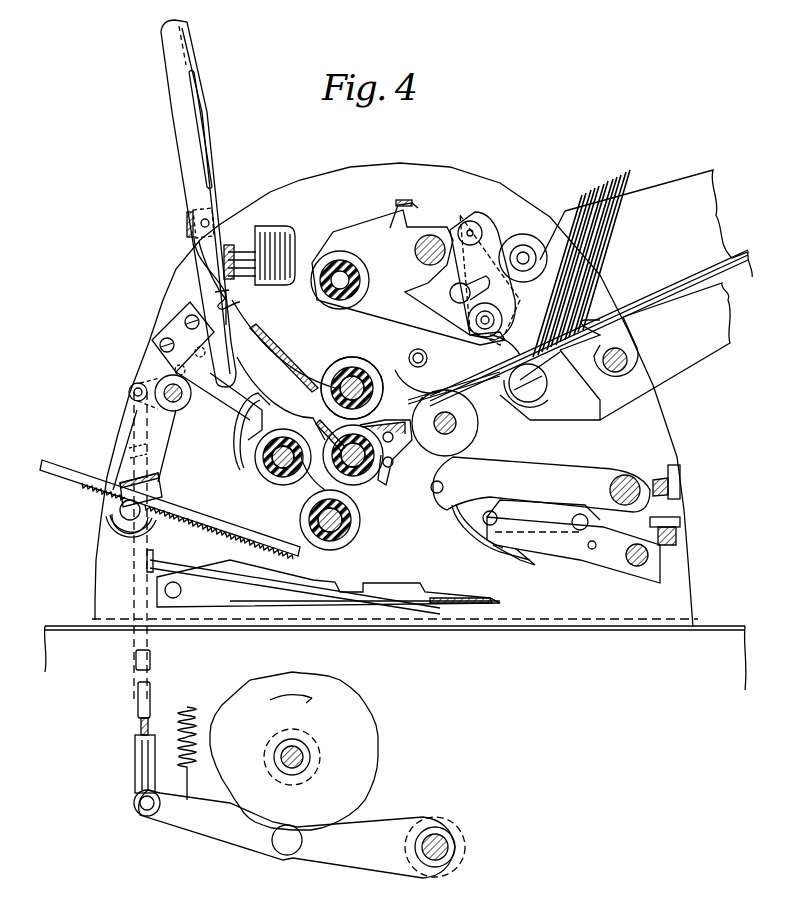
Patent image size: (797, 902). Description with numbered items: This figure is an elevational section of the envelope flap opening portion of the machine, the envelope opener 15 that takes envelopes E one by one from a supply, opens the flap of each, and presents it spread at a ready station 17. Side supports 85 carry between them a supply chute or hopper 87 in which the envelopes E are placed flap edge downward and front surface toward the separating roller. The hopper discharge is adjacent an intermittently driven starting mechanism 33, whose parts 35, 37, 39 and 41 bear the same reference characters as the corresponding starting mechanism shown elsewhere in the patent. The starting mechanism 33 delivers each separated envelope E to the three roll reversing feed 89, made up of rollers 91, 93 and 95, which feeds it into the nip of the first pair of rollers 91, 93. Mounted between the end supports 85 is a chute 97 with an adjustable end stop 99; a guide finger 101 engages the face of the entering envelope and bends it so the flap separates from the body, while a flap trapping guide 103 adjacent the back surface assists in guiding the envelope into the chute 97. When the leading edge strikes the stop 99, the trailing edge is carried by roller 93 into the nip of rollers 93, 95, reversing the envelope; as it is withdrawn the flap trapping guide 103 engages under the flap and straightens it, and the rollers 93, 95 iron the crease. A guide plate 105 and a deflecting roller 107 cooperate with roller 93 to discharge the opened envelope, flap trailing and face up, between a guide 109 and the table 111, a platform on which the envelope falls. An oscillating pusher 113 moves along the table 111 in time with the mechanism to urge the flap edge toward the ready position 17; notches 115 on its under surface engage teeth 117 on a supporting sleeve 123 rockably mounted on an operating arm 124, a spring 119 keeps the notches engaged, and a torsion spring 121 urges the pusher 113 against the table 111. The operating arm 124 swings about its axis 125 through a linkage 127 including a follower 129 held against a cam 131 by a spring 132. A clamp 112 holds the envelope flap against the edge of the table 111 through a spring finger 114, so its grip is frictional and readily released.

The envelope opener 15 is at (453, 130).
The ready station 17 is at (548, 634).
The starting mechanism 33 is at (486, 205).
The guide 35 is at (496, 392).
The screw 37 is at (556, 386).
The roller 39 is at (470, 437).
The roller 41 is at (384, 365).
The side supports 85 is at (652, 432).
The supply chute or hopper 87 is at (663, 285).
The three roll reversing feed 89 is at (391, 486).
The roller 91 is at (341, 362).
The roller 93 is at (366, 484).
The roller 95 is at (274, 478).
The chute 97 is at (190, 75).
The adjustable end stop 99 is at (247, 300).
The guide finger 101 is at (254, 340).
The flap trapping guide 103 is at (250, 422).
The guide plate 105 is at (285, 492).
The deflecting roller 107 is at (348, 541).
The guide 109 is at (490, 532).
The table 111 is at (410, 606).
The clamp 112 is at (565, 557).
The oscillating pusher 113 is at (318, 584).
The spring finger 114 is at (460, 516).
The notches 115 is at (202, 536).
The teeth 117 is at (106, 522).
The spring 119 is at (90, 482).
The torsion spring 121 is at (140, 545).
The supporting sleeve 123 is at (118, 534).
The operating arm 124 is at (150, 425).
The axis 125 is at (165, 381).
The linkage 127 is at (120, 727).
The follower 129 is at (268, 845).
The cam 131 is at (360, 738).
The spring 132 is at (196, 714).
The envelope E is at (580, 205).